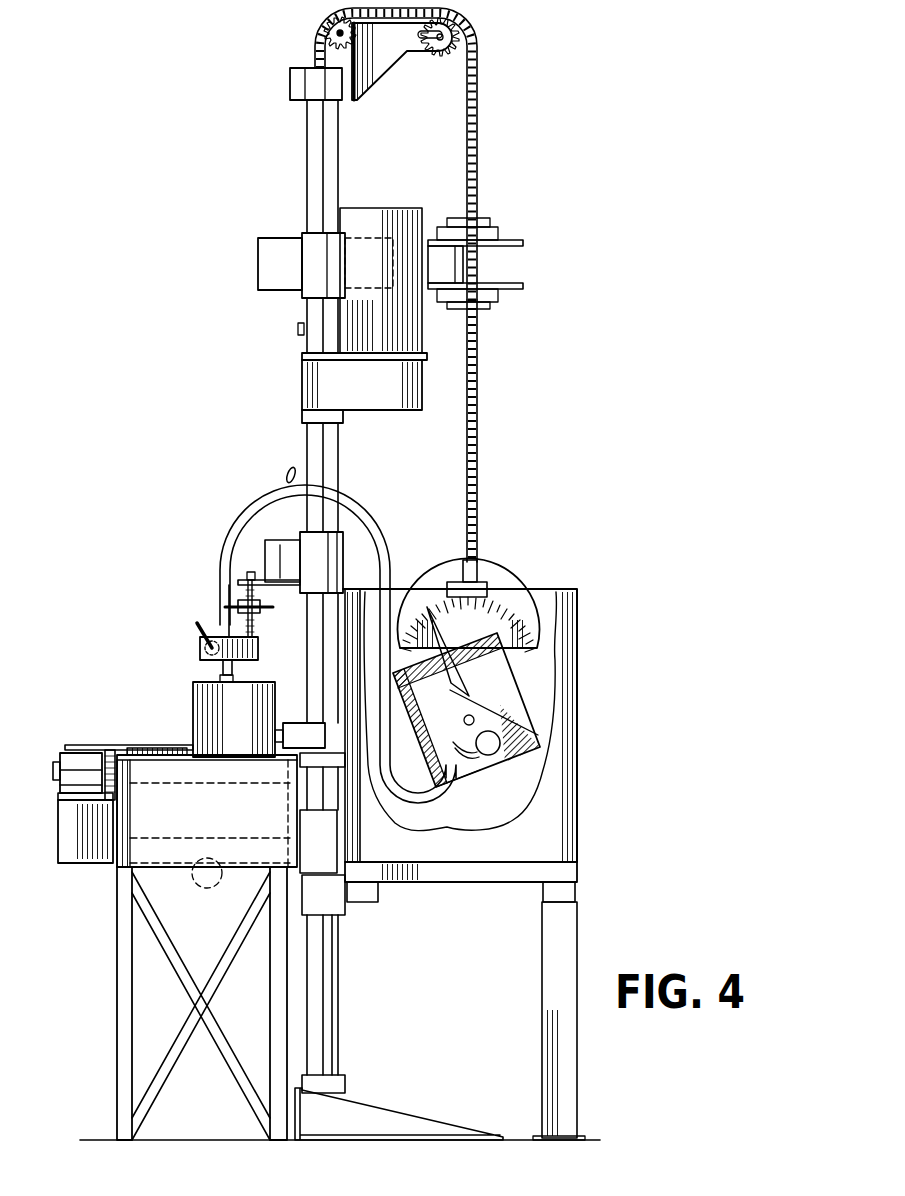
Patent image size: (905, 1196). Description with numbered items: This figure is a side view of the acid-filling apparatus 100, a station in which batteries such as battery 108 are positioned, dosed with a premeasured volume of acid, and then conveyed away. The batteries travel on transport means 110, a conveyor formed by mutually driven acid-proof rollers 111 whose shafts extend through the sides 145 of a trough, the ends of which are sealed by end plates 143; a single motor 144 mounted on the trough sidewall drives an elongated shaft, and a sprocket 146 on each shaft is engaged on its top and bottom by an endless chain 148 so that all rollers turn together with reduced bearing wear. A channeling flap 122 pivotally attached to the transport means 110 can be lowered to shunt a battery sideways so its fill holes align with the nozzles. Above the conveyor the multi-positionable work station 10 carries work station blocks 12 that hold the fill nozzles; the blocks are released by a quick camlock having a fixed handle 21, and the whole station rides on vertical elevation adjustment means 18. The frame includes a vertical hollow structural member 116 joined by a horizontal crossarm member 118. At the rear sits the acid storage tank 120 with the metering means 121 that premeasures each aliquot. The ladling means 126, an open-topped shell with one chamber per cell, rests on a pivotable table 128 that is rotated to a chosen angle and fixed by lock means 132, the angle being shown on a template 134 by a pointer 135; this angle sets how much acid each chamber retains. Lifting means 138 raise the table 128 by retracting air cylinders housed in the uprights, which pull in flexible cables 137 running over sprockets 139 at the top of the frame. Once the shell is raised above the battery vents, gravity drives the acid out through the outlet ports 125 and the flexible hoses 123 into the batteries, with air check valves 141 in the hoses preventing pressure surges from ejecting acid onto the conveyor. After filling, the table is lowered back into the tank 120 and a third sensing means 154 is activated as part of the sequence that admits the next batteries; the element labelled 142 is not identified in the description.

The acid-filling apparatus 100 is at (300, 183).
The multi-positionable work station 10 is at (181, 616).
The work station block 12 is at (213, 636).
The vertical elevation adjustment means 18 is at (258, 624).
The fixed handle 21 is at (195, 624).
The battery 108 is at (253, 683).
The transport means 110 is at (148, 796).
The rollers 111 is at (183, 773).
The vertical upright hollow structural member 116 is at (315, 443).
The horizontal crossarm member 118 is at (507, 240).
The acid storage tank 120 is at (578, 815).
The metering means 121 is at (424, 600).
The channeling flap 122 is at (127, 751).
The flexible hose 123 is at (345, 507).
The outlet port 125 is at (444, 802).
The ladling means 126 is at (515, 703).
The pivotable table 128 is at (465, 776).
The lock means 132 is at (492, 752).
The template 134 is at (505, 598).
The pointer 135 is at (437, 632).
The flexible cable 137 is at (478, 100).
The lifting means 138 is at (479, 422).
The sprocket 139 is at (318, 44).
The air check valve/vent 141 is at (287, 476).
The bore 142 is at (222, 875).
The end plate 143 is at (142, 810).
The motor 144 is at (73, 777).
The side of the trough 145 is at (297, 797).
The sprocket 146 is at (104, 772).
The endless chain 148 is at (100, 752).
The third sensing means 154 is at (297, 731).